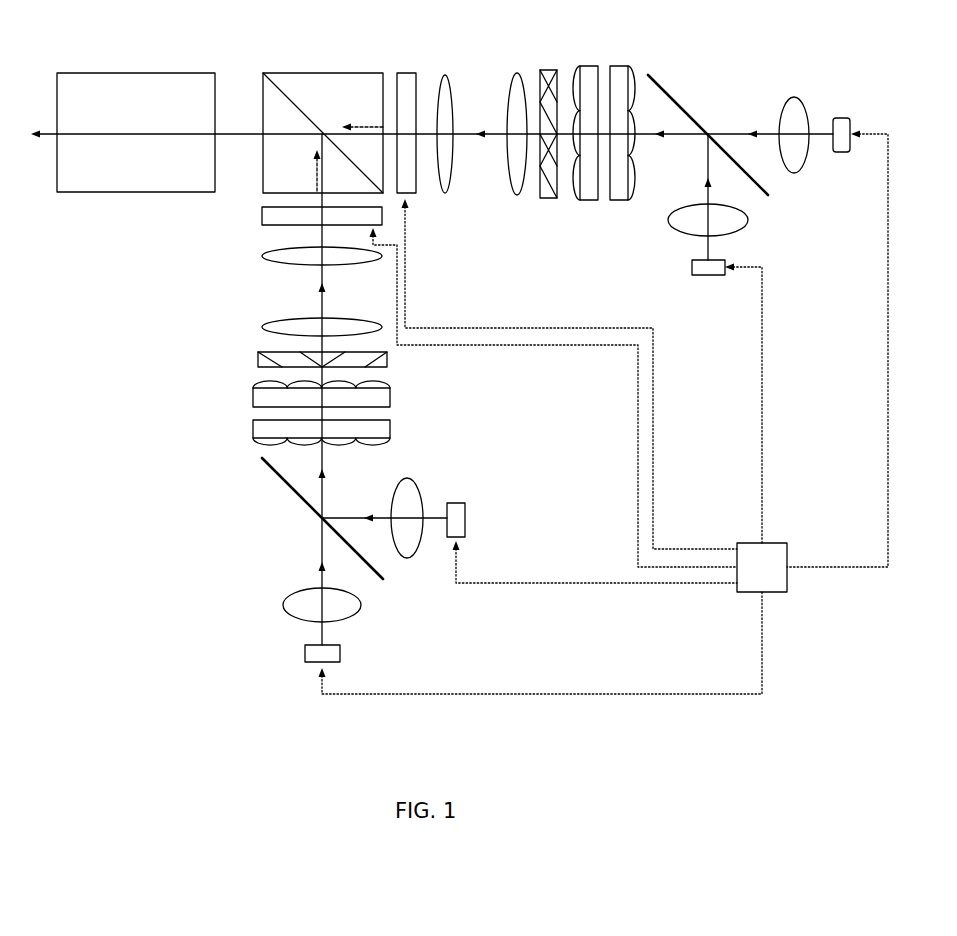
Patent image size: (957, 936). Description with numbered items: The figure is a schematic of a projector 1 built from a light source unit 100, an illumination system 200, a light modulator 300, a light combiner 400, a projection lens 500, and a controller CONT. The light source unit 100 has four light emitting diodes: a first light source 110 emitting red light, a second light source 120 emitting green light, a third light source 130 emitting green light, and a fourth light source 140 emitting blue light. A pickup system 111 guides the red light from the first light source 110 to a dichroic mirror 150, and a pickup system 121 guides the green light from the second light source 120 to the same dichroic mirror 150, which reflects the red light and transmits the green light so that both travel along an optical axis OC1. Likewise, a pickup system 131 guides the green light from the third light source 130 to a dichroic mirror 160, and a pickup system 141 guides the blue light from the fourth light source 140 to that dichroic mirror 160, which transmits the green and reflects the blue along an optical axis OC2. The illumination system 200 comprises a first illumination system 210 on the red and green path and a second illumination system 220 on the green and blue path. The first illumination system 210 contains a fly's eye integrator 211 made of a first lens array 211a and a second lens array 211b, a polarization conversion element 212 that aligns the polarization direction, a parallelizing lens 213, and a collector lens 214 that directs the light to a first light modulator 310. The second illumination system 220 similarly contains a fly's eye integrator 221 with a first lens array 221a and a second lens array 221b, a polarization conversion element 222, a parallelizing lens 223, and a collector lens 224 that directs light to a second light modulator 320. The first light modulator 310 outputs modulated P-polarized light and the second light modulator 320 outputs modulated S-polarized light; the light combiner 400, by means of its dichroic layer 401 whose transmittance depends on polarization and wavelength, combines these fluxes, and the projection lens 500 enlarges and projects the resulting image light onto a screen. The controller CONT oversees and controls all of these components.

The projector 1 is at (572, 407).
The light source unit 100 is at (547, 357).
The first light source 110 is at (708, 281).
The pickup system 111 is at (731, 224).
The second light source 120 is at (841, 156).
The pickup system 121 is at (794, 100).
The third light source 130 is at (344, 652).
The pickup system 131 is at (290, 603).
The fourth light source 140 is at (468, 518).
The pickup system 141 is at (412, 490).
The dichroic mirror 150 is at (670, 97).
The dichroic mirror 160 is at (286, 479).
The illumination system 200 is at (399, 230).
The first illumination system 210 is at (550, 157).
The fly's eye integrator 211 is at (609, 179).
The first lens array 211a is at (619, 203).
The second lens array 211b is at (587, 203).
The polarization conversion element 212 is at (549, 75).
The parallelizing lens 213 is at (514, 82).
The collector lens 214 is at (445, 78).
The second illumination system 220 is at (347, 346).
The fly's eye integrator 221 is at (261, 413).
The first lens array 221a is at (256, 432).
The second lens array 221b is at (256, 397).
The polarization conversion element 222 is at (262, 362).
The parallelizing lens 223 is at (268, 332).
The collector lens 224 is at (281, 258).
The light modulator 300 is at (333, 139).
The first light modulator 310 is at (405, 72).
The second light modulator 320 is at (262, 215).
The light combiner 400 is at (323, 103).
The dichroic layer 401 is at (302, 90).
The projection lens 500 is at (140, 82).
The optical axis OC1 is at (686, 142).
The optical axis OC2 is at (326, 501).
The controller CONT is at (790, 586).